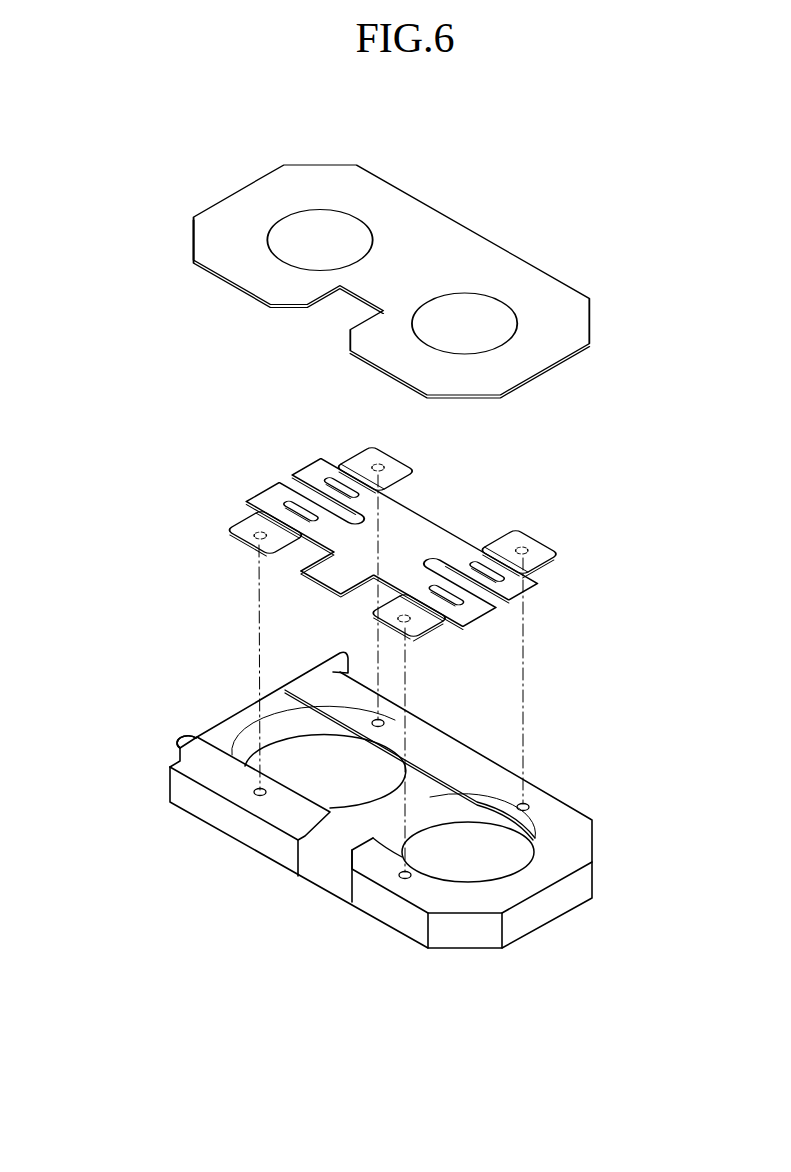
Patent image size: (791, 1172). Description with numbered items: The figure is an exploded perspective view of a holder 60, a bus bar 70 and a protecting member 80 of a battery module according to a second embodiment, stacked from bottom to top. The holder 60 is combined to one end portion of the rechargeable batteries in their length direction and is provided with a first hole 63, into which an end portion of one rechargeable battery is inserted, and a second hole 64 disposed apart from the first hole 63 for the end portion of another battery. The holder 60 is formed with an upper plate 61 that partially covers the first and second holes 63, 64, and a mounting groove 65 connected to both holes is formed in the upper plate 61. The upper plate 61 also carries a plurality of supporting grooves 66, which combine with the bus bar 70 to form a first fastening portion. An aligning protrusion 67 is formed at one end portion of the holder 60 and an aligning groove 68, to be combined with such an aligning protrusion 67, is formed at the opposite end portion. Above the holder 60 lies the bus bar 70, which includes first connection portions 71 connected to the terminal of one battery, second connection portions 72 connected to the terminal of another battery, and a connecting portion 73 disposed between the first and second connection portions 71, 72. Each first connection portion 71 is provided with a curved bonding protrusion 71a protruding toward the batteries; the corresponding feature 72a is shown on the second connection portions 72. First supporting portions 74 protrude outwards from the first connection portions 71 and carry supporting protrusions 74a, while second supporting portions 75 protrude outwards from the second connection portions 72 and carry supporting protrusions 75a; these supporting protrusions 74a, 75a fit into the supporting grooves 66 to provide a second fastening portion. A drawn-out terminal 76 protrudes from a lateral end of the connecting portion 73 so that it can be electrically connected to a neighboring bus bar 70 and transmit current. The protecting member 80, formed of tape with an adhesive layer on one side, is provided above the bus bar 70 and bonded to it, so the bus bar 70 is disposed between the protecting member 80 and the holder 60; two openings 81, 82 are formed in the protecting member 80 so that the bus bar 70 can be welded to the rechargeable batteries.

The holder 60 is at (600, 871).
The upper plate 61 is at (487, 763).
The first hole 63 is at (402, 829).
The second hole 64 is at (246, 727).
The mounting groove 65 is at (420, 787).
The supporting grooves 66 is at (378, 722).
The aligning protrusion 67 is at (340, 656).
The aligning groove 68 is at (176, 757).
The bus bar 70 is at (440, 520).
The first connection portions 71 is at (513, 600).
The bonding protrusion 71a is at (483, 565).
The second connection portions 72 is at (303, 466).
The left slots 72a is at (330, 480).
The connecting portion 73 is at (395, 520).
The first supporting portions 74 is at (552, 558).
The supporting protrusions 74a is at (523, 549).
The second supporting portions 75 is at (360, 452).
The supporting protrusions 75a is at (377, 463).
The drawn-out terminal 76 is at (320, 580).
The protecting member 80 is at (473, 229).
The opening 81 is at (513, 305).
The opening 82 is at (320, 211).